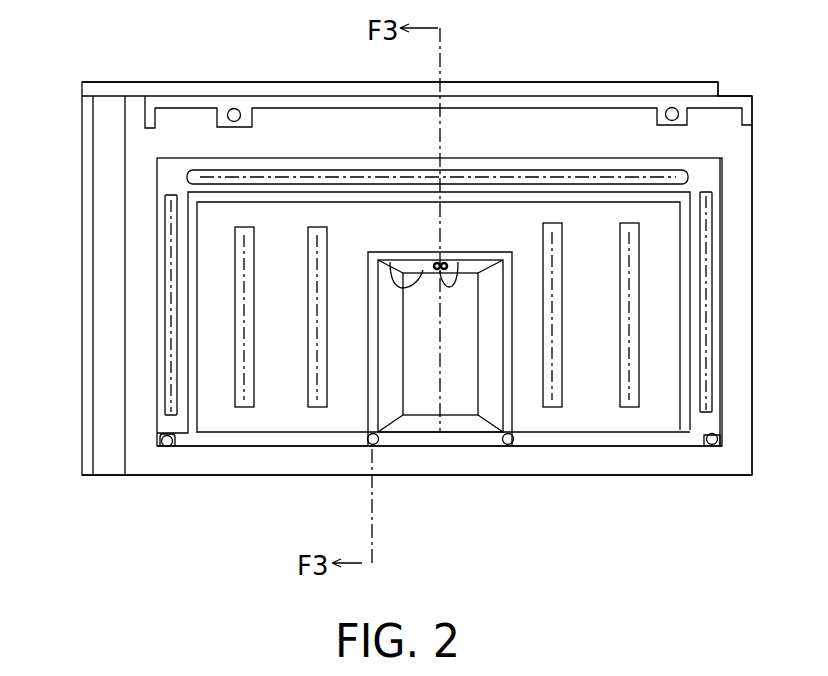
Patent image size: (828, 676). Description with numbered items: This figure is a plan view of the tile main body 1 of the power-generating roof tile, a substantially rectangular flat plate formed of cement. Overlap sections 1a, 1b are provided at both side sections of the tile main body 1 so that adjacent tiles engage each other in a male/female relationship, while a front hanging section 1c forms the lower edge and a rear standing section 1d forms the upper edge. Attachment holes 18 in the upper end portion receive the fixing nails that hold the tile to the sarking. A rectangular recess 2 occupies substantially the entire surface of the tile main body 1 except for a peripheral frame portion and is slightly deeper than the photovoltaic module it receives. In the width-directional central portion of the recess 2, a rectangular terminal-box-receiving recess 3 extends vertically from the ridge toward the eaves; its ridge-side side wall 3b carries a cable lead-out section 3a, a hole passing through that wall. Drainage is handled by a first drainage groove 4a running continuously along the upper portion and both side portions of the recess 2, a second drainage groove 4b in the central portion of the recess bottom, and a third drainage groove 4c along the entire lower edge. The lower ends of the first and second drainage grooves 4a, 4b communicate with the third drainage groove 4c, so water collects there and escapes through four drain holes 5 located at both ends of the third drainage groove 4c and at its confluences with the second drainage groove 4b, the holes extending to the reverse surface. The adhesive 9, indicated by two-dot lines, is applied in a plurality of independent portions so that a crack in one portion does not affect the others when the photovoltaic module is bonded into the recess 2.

The tile main body 1 is at (766, 287).
The overlap section 1a is at (108, 311).
The overlap section 1b is at (753, 355).
The front hanging section 1c is at (633, 468).
The rear standing section 1d is at (607, 92).
The attachment hole 18 is at (234, 108).
The recess 2 is at (655, 253).
The terminal-box-receiving recess 3 is at (455, 403).
The cable lead-out section 3a is at (458, 262).
The ridge-side side wall 3b is at (393, 266).
The first drainage groove 4a is at (190, 348).
The second drainage groove 4b is at (373, 390).
The third drainage groove 4c is at (257, 440).
The drain hole 5 is at (167, 448).
The adhesive 9 is at (167, 242).